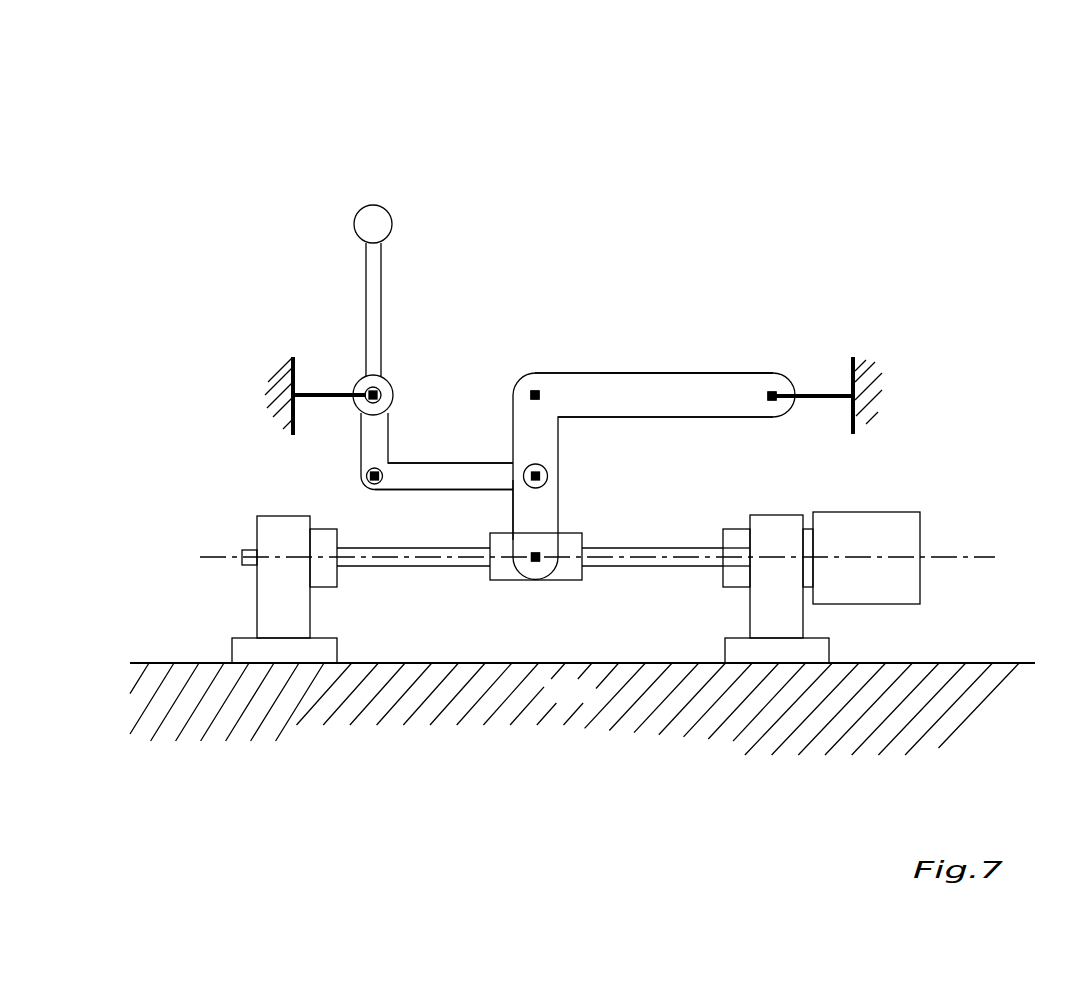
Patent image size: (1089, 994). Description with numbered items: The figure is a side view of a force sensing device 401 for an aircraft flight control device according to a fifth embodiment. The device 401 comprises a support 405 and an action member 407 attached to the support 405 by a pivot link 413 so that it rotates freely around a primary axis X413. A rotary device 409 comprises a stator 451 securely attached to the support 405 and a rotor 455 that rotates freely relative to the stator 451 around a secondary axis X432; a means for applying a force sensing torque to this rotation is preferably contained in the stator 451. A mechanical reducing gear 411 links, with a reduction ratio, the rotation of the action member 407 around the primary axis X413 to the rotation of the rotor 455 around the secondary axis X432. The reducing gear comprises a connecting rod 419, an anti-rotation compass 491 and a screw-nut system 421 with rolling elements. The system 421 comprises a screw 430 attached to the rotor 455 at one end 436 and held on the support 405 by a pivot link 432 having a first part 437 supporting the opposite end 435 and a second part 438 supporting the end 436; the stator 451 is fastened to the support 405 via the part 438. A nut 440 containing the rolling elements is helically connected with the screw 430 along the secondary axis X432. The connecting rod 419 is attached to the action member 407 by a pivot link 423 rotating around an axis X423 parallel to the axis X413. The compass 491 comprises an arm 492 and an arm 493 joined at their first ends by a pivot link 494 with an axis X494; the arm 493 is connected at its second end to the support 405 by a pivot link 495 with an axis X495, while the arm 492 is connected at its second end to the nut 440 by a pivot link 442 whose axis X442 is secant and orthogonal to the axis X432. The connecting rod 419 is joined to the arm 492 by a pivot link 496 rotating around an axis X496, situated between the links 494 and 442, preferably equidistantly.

The force sensing device 401 is at (802, 197).
The support 405 is at (276, 390).
The action member 407 is at (372, 307).
The rotary device 409 is at (897, 500).
The mechanical reducing gear 411 is at (617, 362).
The pivot link 413 is at (362, 393).
The primary axis X413 is at (382, 395).
The connecting rod 419 is at (438, 477).
The screw-nut system 421 is at (668, 620).
The pivot link 423 is at (377, 488).
The axis of the pivot link X423 is at (373, 470).
The screw 430 is at (680, 562).
The pivot link 432 is at (572, 800).
The secondary axis X432 is at (622, 558).
The end of the screw 435 is at (347, 563).
The end of the screw 436 is at (717, 562).
The first part 437 is at (288, 617).
The second part 438 is at (782, 625).
The nut 440 is at (507, 584).
The pivot link 442 is at (524, 553).
The axis of the pivot link X442 is at (533, 552).
The stator 451 is at (913, 530).
The rotor 455 is at (740, 543).
The anti-rotation compass 491 is at (709, 445).
The arm 492 is at (547, 520).
The arm 493 is at (660, 403).
The pivot link 494 is at (530, 395).
The axis of the pivot link X494 is at (537, 392).
The pivot link 495 is at (765, 396).
The axis of the pivot link X495 is at (773, 393).
The pivot link 496 is at (544, 467).
The axis of the pivot link X496 is at (537, 487).